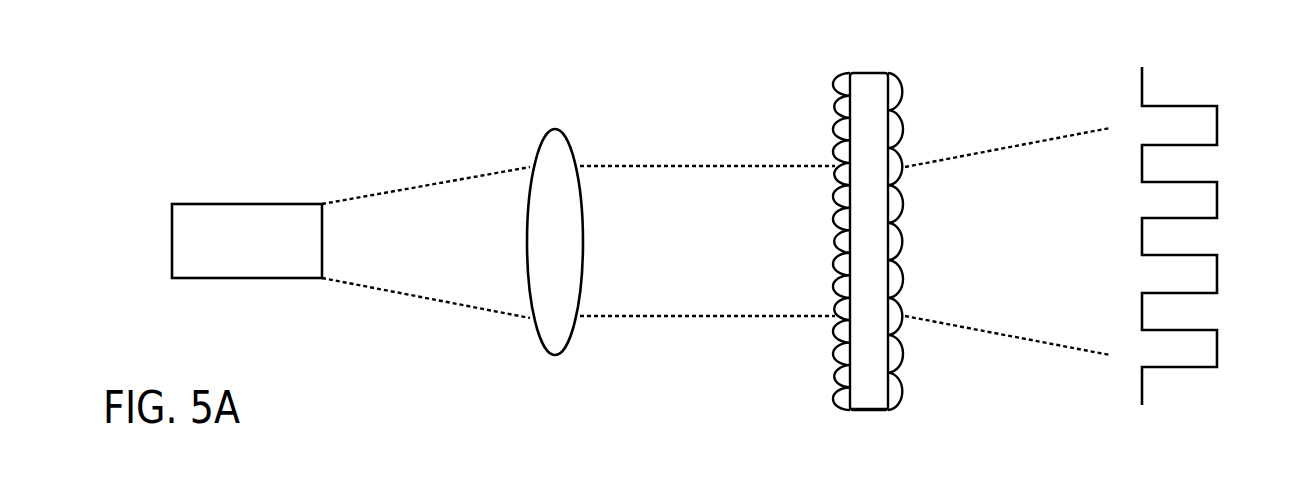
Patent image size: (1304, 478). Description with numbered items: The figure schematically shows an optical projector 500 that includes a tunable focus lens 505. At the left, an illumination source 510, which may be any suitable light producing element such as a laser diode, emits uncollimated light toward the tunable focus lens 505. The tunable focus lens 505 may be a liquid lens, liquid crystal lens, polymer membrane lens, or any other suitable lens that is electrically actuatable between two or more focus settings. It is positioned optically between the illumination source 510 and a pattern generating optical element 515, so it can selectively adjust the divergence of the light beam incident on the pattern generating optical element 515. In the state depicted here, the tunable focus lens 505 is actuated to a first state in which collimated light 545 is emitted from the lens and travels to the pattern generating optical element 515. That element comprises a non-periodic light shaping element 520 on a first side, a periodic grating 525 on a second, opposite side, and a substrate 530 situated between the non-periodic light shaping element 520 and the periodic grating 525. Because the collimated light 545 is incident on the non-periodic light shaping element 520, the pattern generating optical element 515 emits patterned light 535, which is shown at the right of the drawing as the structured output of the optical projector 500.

The optical projector 500 is at (337, 67).
The tunable focus lens 505 is at (555, 129).
The illumination source 510 is at (307, 268).
The pattern generating optical element 515 is at (865, 241).
The non-periodic light shaping element 520 is at (836, 107).
The periodic grating 525 is at (903, 92).
The substrate 530 is at (868, 412).
The patterned light 535 is at (1202, 72).
The collimated light 545 is at (705, 149).